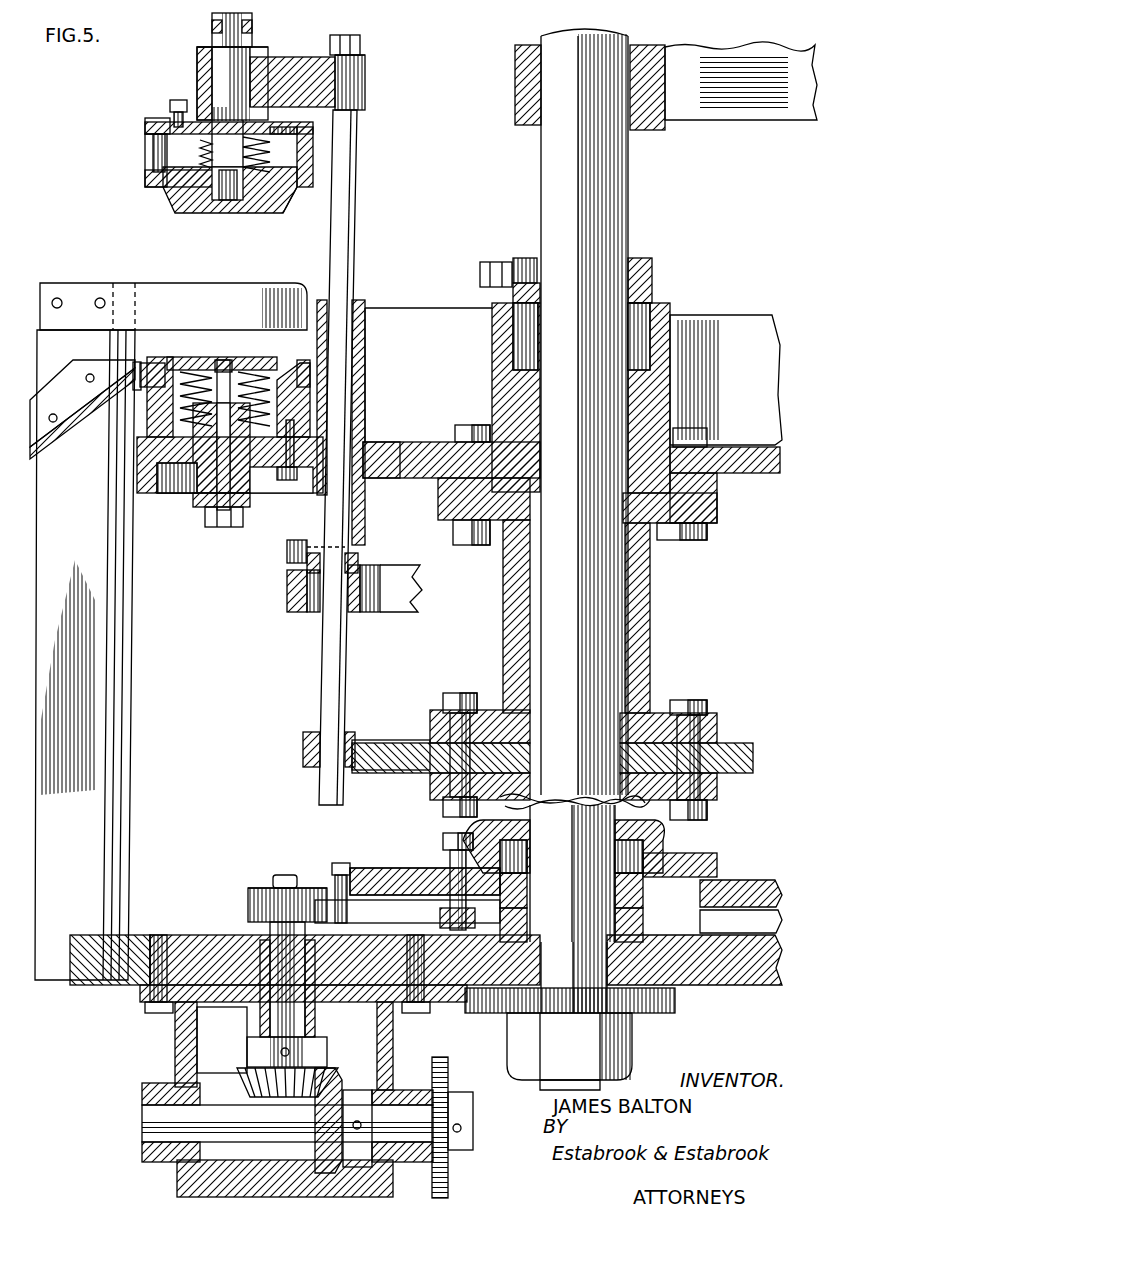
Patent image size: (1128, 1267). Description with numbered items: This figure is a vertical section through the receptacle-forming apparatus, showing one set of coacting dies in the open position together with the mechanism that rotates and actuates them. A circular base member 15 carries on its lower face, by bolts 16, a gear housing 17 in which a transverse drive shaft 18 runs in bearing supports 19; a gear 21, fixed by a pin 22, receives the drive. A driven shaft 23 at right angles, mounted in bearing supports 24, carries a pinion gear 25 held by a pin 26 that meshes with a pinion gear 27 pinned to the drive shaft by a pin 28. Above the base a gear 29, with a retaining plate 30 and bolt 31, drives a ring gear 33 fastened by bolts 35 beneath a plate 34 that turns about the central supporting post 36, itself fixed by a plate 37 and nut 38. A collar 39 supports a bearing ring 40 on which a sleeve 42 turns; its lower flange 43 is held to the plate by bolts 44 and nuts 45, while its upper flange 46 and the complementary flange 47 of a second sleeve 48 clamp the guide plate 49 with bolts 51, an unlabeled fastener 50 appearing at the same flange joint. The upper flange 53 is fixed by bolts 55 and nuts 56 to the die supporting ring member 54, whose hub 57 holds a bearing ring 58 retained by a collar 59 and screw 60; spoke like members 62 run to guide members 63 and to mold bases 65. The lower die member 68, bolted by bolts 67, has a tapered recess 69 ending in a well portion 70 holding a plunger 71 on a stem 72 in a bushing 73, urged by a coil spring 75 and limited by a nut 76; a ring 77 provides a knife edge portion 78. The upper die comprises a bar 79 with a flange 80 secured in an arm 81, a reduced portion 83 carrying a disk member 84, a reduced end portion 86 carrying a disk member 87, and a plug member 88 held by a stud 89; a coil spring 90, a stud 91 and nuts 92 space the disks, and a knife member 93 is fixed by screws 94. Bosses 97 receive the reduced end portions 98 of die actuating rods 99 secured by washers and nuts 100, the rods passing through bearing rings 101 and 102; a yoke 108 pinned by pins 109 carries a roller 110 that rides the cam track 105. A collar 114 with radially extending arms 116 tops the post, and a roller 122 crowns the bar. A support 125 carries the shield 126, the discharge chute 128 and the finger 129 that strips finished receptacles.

The base member 15 is at (186, 935).
The bolts 16 is at (150, 1010).
The gear housing 17 is at (175, 1050).
The drive shaft 18 is at (225, 1142).
The bearing supports 19 is at (142, 1150).
The gear 21 is at (448, 1065).
The pin 22 is at (462, 1130).
The driven shaft 23 is at (245, 1017).
The bearing supports 24 is at (262, 1045).
The pinion gear 25 is at (245, 1070).
The pin 26 is at (289, 1052).
The pinion gear 27 is at (312, 1160).
The pin 28 is at (356, 1090).
The gear 29 is at (248, 905).
The retaining plate 30 is at (262, 890).
The bolt 31 is at (288, 875).
The ring gear 33 is at (358, 913).
The plate 34 is at (372, 867).
The bolts 35 is at (341, 866).
The supporting post 36 is at (630, 187).
The plate 37 is at (675, 1000).
The nut 38 is at (632, 1031).
The collar 39 is at (527, 917).
The bearing ring 40 is at (527, 880).
The sleeve 42 is at (525, 822).
The annular flange 43 is at (438, 868).
The bolts 44 is at (441, 840).
The nuts 45 is at (527, 897).
The annular flange 46 is at (430, 775).
The complementary flange 47 is at (432, 712).
The second sleeve 48 is at (503, 621).
The guide plate 49 is at (395, 745).
The bolt 50 is at (470, 688).
The bolts 51 is at (432, 795).
The annular flange 53 is at (718, 520).
The die supporting ring member 54 is at (426, 447).
The bolts 55 is at (472, 426).
The nuts 56 is at (453, 533).
The hub 57 is at (493, 372).
The bearing ring 58 is at (518, 318).
The collar 59 is at (522, 258).
The screw 60 is at (488, 267).
The spoke like members 62 is at (385, 442).
The guide members 63 is at (370, 362).
The mold bases 65 is at (166, 492).
The bolts 67 is at (286, 482).
The lower die member 68 is at (193, 445).
The tapered recess 69 is at (172, 360).
The well portion 70 is at (147, 415).
The plunger 71 is at (186, 370).
The stem 72 is at (226, 360).
The bushing 73 is at (252, 502).
The coil spring 75 is at (160, 450).
The nut 76 is at (208, 527).
The ring 77 is at (136, 372).
The knife edge portion 78 is at (140, 368).
The bar 79 is at (215, 80).
The flange 80 is at (205, 52).
The arm 81 is at (283, 62).
The reduced portion 83 is at (255, 166).
The disk member 84 is at (147, 122).
The reduced end portion 86 is at (262, 205).
The disk member 87 is at (145, 180).
The plug member 88 is at (175, 195).
The stud 89 is at (220, 202).
The coil spring 90 is at (255, 150).
The stud 91 is at (158, 150).
The nuts 92 is at (173, 105).
The knife member 93 is at (145, 158).
The screws 94 is at (145, 127).
The bosses 97 is at (365, 86).
The reduced end portions 98 is at (365, 68).
The die actuating rods 99 is at (357, 122).
The washers and nuts 100 is at (360, 45).
The bearing rings 101 is at (362, 305).
The bearing rings 102 is at (312, 770).
The cam track 105 is at (287, 590).
The yoke 108 is at (362, 571).
The pins 109 is at (358, 555).
The roller 110 is at (287, 552).
The collar 114 is at (522, 128).
The radially extending arms 116 is at (735, 118).
The roller 122 is at (250, 20).
The support 125 is at (128, 747).
The shield 126 is at (725, 320).
The discharge chute 128 is at (95, 405).
The finger 129 is at (258, 293).